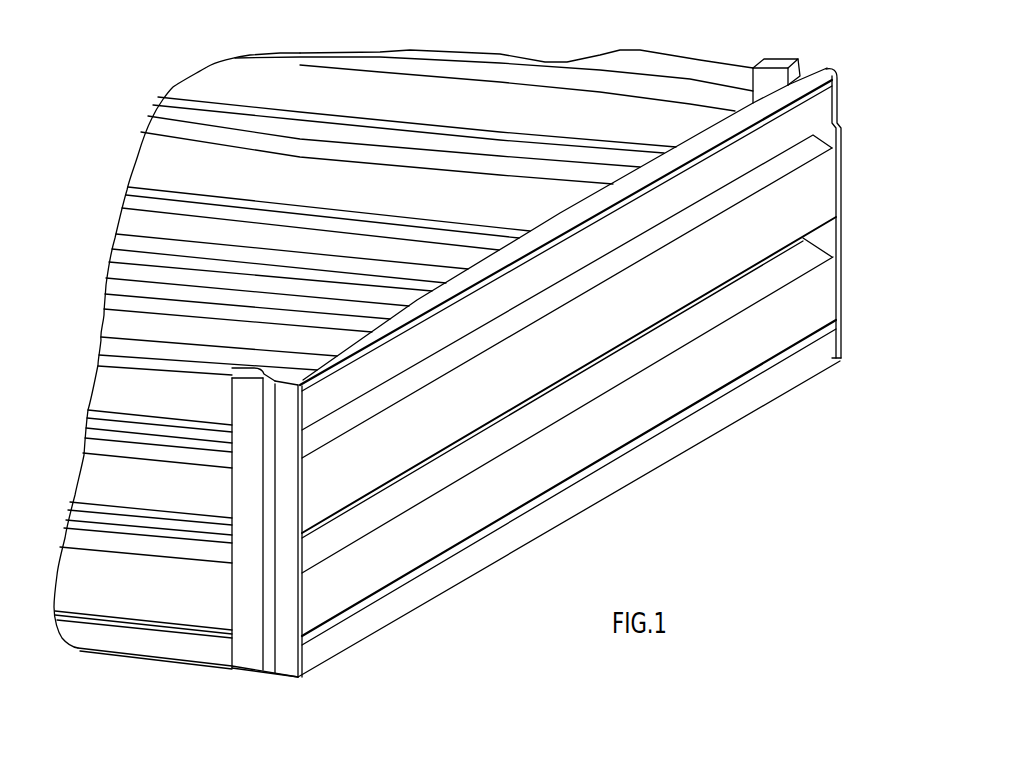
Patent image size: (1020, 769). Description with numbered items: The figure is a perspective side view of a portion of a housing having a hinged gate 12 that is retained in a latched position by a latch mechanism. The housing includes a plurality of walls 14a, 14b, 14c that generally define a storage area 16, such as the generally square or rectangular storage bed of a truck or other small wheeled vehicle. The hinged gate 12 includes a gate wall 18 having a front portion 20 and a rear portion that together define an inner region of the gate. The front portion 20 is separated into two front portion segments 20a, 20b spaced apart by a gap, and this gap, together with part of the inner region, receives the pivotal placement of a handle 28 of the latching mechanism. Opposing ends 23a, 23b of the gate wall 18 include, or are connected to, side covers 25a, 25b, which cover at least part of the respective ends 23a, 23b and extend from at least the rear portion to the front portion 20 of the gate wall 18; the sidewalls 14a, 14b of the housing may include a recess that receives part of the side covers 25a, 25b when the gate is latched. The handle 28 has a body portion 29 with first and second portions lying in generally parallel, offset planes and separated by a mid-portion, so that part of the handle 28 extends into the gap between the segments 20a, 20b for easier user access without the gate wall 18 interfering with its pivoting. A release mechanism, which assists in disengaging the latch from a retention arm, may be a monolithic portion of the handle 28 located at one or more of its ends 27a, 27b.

The hinged gate 12 is at (571, 403).
The wall 14a is at (162, 598).
The wall 14b is at (652, 128).
The wall 14c is at (122, 323).
The storage area 16 is at (281, 233).
The gate wall 18 is at (358, 595).
The front portion 20 is at (602, 480).
The front portion segment 20a is at (807, 108).
The front portion segment 20b is at (743, 357).
The end of the gate wall 23a is at (313, 602).
The end of the gate wall 23b is at (817, 323).
The side cover 25a is at (287, 647).
The side cover 25b is at (833, 254).
The end of the handle 27a is at (302, 500).
The end of the handle 27b is at (817, 212).
The handle 28 is at (813, 195).
The body portion 29 is at (817, 163).